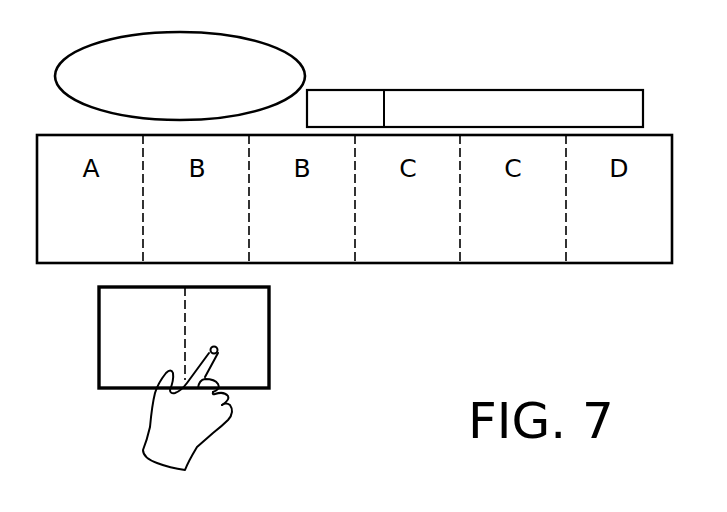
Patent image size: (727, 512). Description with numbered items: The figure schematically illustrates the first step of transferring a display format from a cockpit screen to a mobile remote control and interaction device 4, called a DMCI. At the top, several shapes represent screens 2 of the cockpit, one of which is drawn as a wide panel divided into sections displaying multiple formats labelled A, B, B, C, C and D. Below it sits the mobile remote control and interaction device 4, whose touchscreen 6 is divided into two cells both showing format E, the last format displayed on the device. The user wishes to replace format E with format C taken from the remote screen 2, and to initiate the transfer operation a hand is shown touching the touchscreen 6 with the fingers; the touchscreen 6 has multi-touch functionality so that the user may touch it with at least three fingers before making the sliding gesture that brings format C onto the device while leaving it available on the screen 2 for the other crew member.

The screen 2 is at (97, 57).
The mobile remote control and interaction device 4 is at (263, 317).
The touchscreen 6 is at (113, 327).